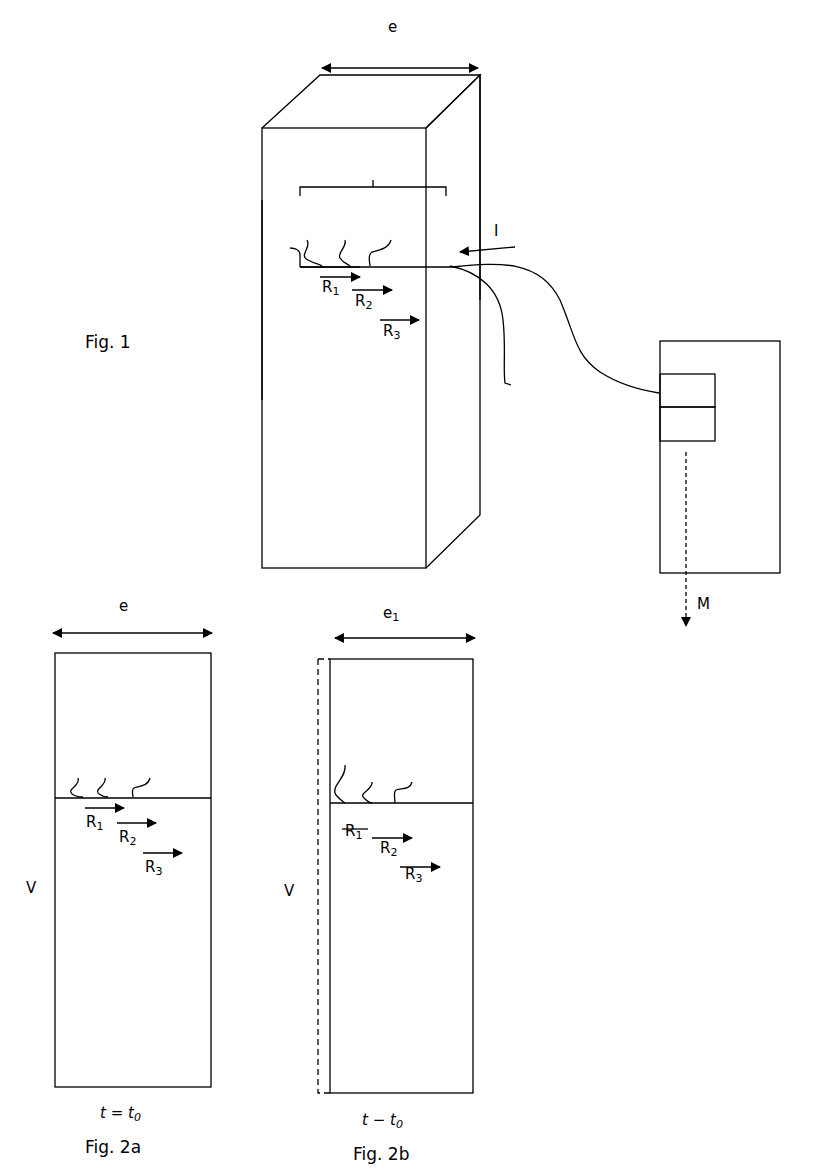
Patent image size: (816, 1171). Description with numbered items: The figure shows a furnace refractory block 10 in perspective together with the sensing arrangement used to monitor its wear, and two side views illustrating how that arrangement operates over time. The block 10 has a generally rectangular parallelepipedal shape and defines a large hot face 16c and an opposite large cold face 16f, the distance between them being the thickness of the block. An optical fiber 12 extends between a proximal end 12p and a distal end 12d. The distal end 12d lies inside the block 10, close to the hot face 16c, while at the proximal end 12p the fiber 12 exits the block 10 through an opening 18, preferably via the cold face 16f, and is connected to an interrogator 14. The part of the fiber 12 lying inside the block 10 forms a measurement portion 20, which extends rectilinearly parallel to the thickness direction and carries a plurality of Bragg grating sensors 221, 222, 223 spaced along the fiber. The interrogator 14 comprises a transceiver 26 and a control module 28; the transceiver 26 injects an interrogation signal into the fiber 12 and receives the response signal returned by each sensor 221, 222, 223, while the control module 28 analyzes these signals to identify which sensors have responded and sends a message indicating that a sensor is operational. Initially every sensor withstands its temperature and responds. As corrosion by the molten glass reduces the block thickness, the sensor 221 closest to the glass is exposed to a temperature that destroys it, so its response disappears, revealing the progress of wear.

In FIG. 1, the refractory block 10 is at (254, 176).
In FIG. 1, the optical fiber 12 is at (306, 250).
In FIG. 1, the distal end 12d is at (290, 248).
In FIG. 1, the proximal end 12p is at (659, 393).
In FIG. 1, the interrogator 14 is at (717, 341).
In FIG. 1, the hot face 16c is at (262, 290).
In FIG. 1, the cold face 16f is at (447, 158).
In FIG. 1, the opening 18 is at (495, 331).
In FIG. 1, the measurement portion 20 is at (373, 170).
In FIG. 1, the first sensor 221 is at (310, 245).
In FIG. 2A, the first sensor 221 is at (73, 778).
In FIG. 2B, the first sensor 221 is at (345, 773).
In FIG. 1, the second sensor 222 is at (351, 245).
In FIG. 2A, the second sensor 222 is at (112, 778).
In FIG. 2B, the second sensor 222 is at (378, 782).
In FIG. 1, the third sensor 223 is at (388, 245).
In FIG. 2A, the third sensor 223 is at (151, 778).
In FIG. 2B, the third sensor 223 is at (413, 782).
In FIG. 1, the transceiver 26 is at (687, 390).
In FIG. 1, the control module 28 is at (687, 424).